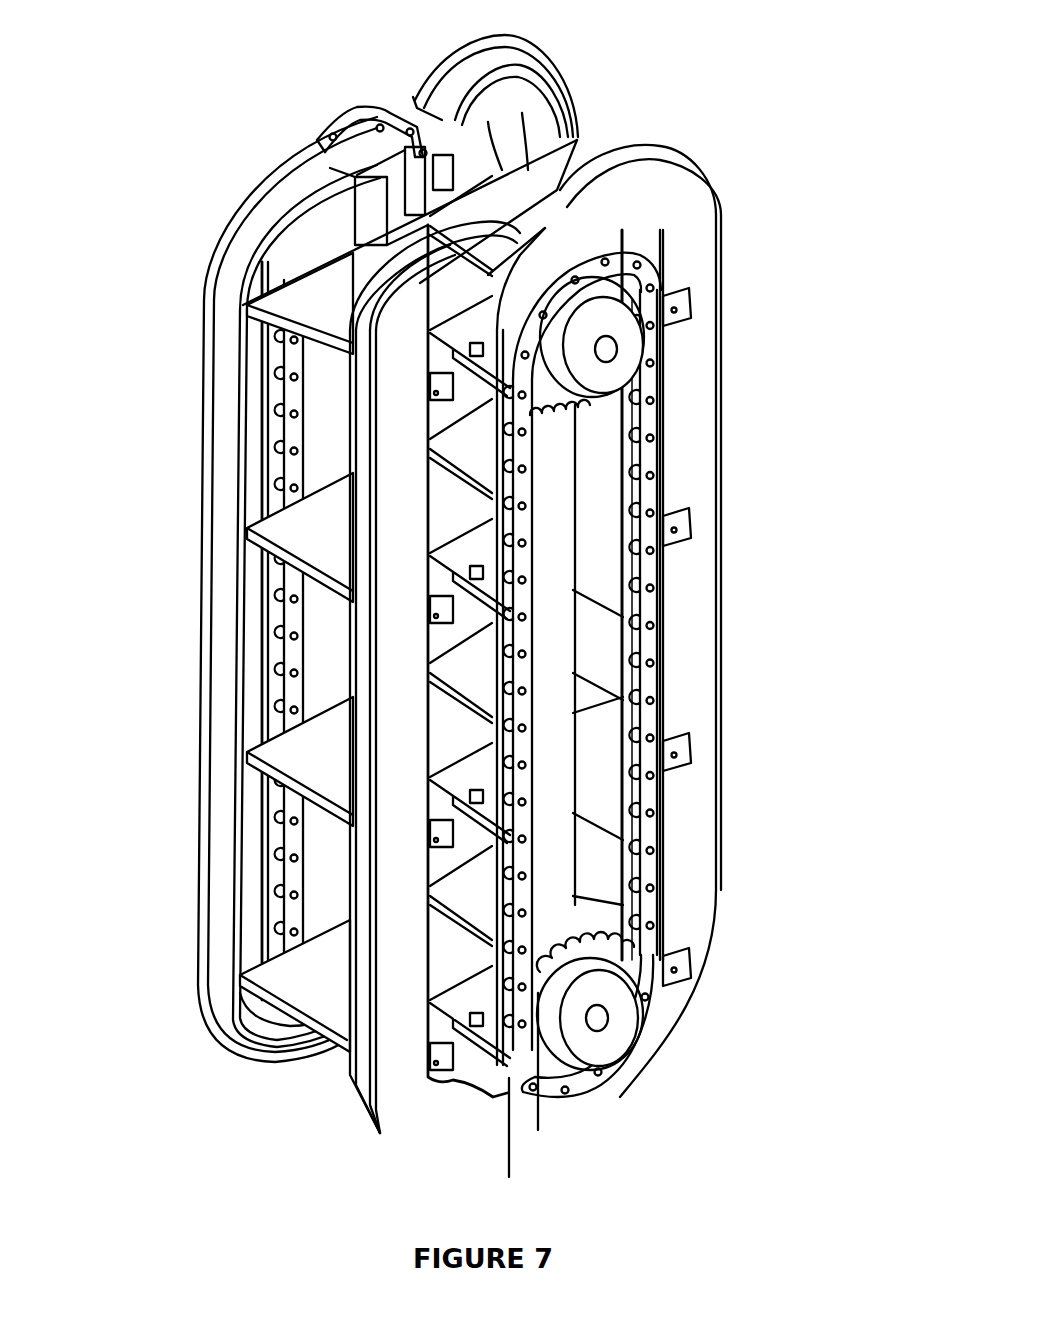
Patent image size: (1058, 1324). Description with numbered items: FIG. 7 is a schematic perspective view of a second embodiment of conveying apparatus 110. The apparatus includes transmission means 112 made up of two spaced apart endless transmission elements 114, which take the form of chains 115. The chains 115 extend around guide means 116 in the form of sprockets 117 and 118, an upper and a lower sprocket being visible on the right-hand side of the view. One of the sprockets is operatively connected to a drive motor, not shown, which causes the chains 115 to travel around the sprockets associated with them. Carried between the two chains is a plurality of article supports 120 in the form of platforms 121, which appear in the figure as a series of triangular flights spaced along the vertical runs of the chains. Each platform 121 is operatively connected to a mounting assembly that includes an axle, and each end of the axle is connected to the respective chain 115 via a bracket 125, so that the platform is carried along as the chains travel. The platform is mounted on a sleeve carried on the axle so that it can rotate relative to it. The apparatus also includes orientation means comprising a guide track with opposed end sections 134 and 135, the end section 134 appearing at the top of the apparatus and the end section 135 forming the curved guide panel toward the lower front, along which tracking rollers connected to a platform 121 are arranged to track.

The conveying apparatus 110 is at (290, 1123).
The transmission means 112 is at (683, 605).
The endless transmission element 114 is at (363, 100).
The chain 115 is at (647, 675).
The guide means 116 is at (630, 335).
The sprocket 117 is at (547, 402).
The sprocket 118 is at (555, 1077).
The article support 120 is at (345, 1057).
The platform 121 is at (290, 975).
The bracket 125 is at (512, 1145).
The end section 134 is at (677, 190).
The end section 135 is at (440, 1112).